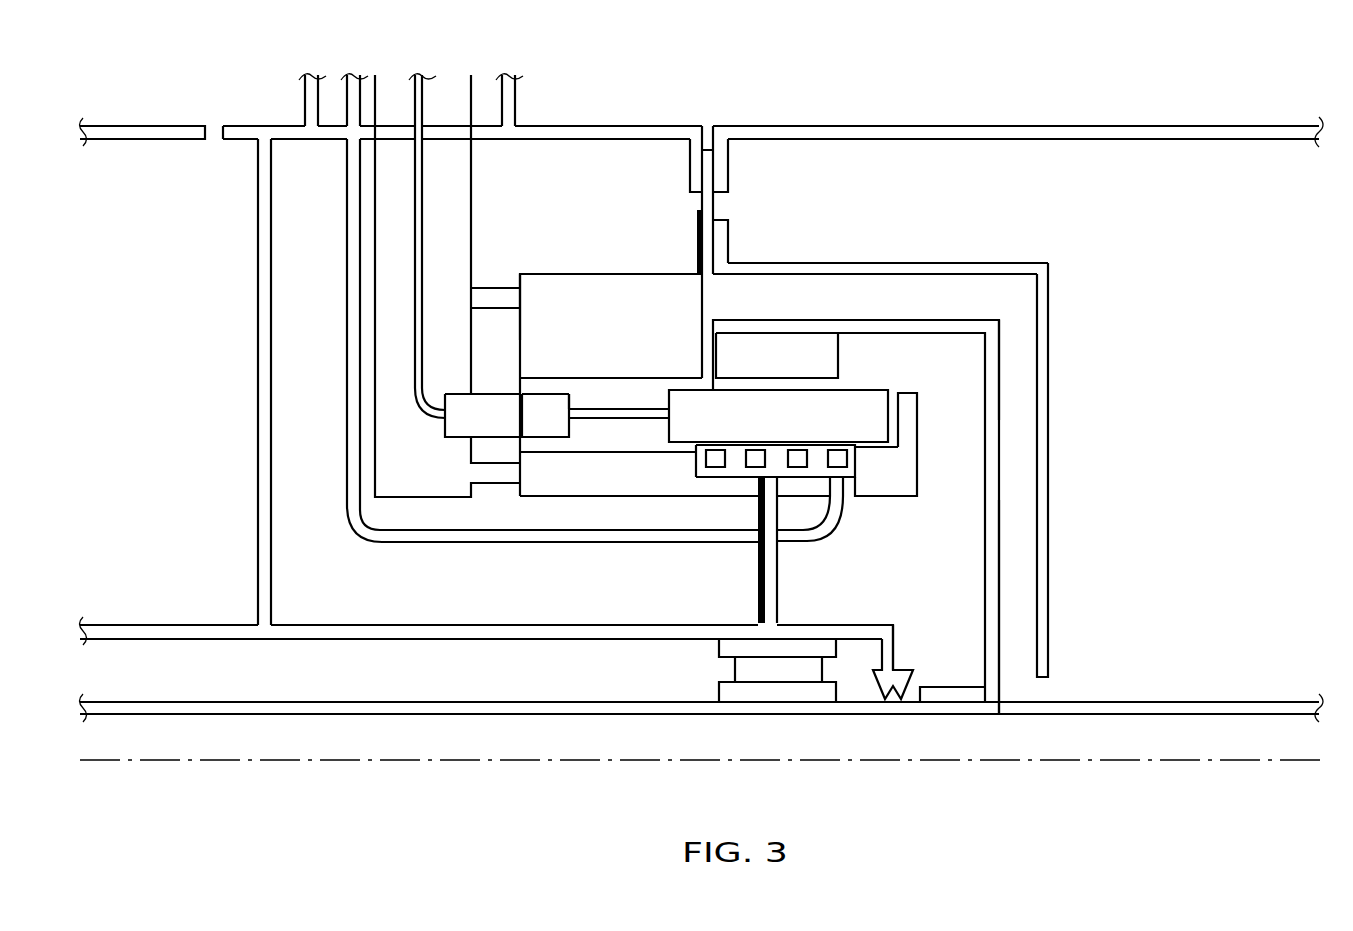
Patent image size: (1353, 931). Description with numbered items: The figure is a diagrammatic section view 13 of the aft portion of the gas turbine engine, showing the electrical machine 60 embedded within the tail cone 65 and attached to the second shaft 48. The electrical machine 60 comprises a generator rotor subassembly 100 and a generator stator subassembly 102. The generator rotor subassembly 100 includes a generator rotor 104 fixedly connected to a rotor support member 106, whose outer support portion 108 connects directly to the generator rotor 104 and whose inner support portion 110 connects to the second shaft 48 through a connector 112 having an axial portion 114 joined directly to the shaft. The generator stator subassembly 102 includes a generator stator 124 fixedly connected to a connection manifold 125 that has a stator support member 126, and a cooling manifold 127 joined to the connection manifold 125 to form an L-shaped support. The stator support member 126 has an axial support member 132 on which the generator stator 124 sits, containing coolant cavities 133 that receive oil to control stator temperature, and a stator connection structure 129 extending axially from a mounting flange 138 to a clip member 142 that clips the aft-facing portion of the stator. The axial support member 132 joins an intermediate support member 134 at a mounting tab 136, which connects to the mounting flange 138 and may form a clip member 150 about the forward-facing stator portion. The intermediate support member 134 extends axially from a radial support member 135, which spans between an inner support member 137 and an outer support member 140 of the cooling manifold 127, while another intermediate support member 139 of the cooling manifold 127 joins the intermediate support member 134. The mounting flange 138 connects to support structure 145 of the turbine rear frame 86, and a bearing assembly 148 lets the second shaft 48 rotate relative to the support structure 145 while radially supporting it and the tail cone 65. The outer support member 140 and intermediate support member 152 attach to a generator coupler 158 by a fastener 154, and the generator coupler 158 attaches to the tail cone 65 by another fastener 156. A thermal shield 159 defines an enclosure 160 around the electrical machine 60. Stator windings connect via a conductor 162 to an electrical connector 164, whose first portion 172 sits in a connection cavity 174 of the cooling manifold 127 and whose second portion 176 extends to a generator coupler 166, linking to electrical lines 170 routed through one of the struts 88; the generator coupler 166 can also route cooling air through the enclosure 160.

The engine system 13 is at (658, 100).
The second shaft 48 is at (640, 714).
The electrical machine 60 is at (797, 305).
The tail cone 65 is at (995, 126).
The turbine rear frame 86 is at (205, 253).
The struts 88 is at (515, 95).
The generator rotor subassembly 100 is at (887, 305).
The generator stator subassembly 102 is at (905, 503).
The generator rotor 104 is at (780, 320).
The rotor support member 106 is at (1010, 358).
The outer support portion 108 is at (925, 320).
The inner support portion 110 is at (1000, 597).
The connector 112 is at (1012, 700).
The axial portion 114 is at (942, 687).
The generator stator 124 is at (860, 390).
The connection manifold 125 is at (737, 498).
The stator support member 126 is at (818, 444).
The cooling manifold 127 is at (548, 502).
The stator connection structure 129 is at (870, 498).
The axial support member 132 is at (742, 442).
The coolant cavities 133 is at (842, 458).
The intermediate support member 134 is at (650, 453).
The radial support member 135 is at (518, 274).
The mounting tab 136 is at (780, 504).
The inner support member 137 is at (647, 498).
The mounting flange 138 is at (758, 592).
The intermediate support member 139 is at (545, 415).
The outer support member 140 is at (572, 274).
The clip member 142 is at (918, 446).
The support structure 145 is at (247, 553).
The bearing assembly 148 is at (717, 667).
The clip member 150 is at (690, 470).
The intermediate support member 152 is at (583, 380).
The fastener 154 is at (698, 243).
The fastener 156 is at (728, 160).
The generator coupler 158 is at (698, 208).
The thermal shield 159 is at (1050, 380).
The enclosure 160 is at (1010, 550).
The conductor 162 is at (650, 420).
The electrical connector 164 is at (452, 442).
The generator coupler 166 is at (398, 411).
The electrical lines 170 is at (425, 96).
The first portion 172 is at (545, 394).
The connection cavity 174 is at (582, 401).
The second portion 176 is at (498, 387).